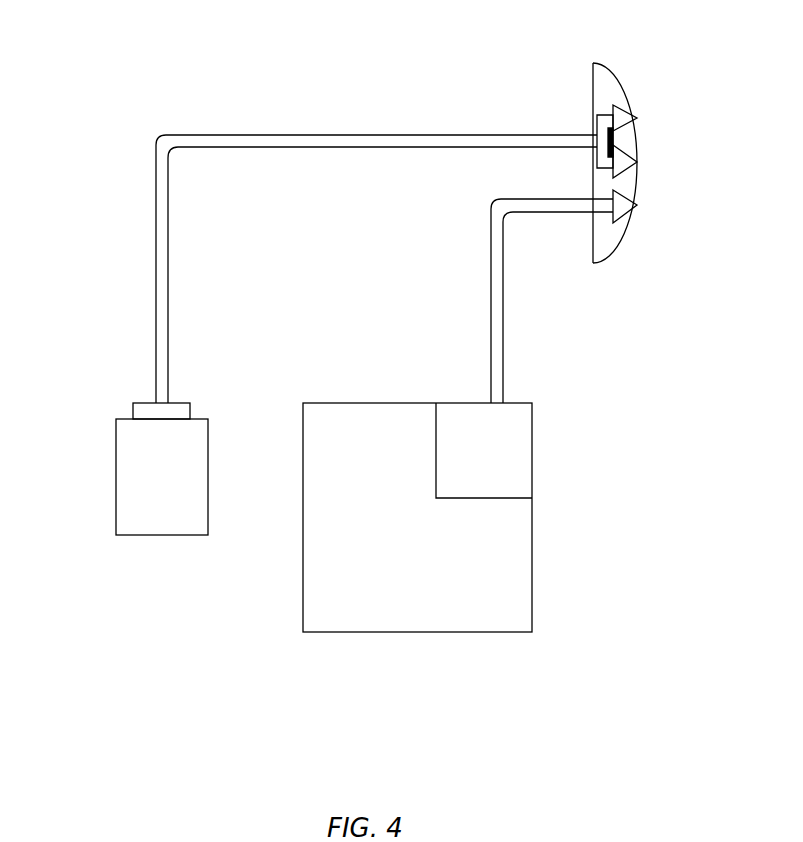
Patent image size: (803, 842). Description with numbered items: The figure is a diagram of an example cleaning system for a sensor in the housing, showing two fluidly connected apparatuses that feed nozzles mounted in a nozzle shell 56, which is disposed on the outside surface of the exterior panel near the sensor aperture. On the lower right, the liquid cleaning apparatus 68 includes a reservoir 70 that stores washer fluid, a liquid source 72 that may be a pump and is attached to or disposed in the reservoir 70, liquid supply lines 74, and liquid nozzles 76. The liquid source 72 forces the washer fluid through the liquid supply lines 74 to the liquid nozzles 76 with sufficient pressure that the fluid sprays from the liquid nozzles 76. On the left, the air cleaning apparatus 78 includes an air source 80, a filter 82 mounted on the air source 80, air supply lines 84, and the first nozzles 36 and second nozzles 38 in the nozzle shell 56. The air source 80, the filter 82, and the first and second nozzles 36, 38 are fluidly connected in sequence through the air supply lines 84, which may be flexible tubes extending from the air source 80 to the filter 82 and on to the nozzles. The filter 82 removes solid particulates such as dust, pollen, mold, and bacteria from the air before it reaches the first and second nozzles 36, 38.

The nozzle shell 56 is at (613, 72).
The first nozzles 36 is at (628, 112).
The second nozzles 38 is at (628, 152).
The liquid nozzles 76 is at (622, 222).
The air supply lines 84 is at (157, 240).
The filter 82 is at (140, 402).
The air source 80 is at (117, 495).
The air cleaning apparatus 78 is at (150, 563).
The liquid supply lines 74 is at (503, 327).
The liquid source 72 is at (470, 499).
The reservoir 70 is at (532, 570).
The liquid cleaning apparatus 68 is at (352, 645).